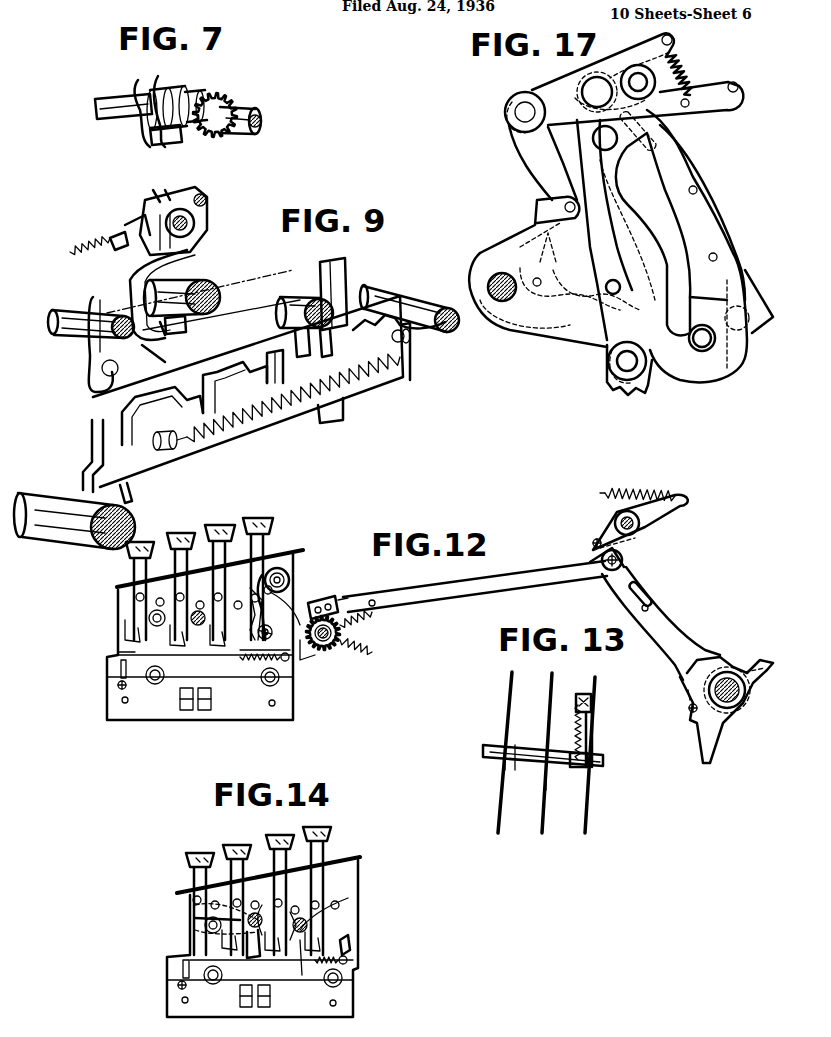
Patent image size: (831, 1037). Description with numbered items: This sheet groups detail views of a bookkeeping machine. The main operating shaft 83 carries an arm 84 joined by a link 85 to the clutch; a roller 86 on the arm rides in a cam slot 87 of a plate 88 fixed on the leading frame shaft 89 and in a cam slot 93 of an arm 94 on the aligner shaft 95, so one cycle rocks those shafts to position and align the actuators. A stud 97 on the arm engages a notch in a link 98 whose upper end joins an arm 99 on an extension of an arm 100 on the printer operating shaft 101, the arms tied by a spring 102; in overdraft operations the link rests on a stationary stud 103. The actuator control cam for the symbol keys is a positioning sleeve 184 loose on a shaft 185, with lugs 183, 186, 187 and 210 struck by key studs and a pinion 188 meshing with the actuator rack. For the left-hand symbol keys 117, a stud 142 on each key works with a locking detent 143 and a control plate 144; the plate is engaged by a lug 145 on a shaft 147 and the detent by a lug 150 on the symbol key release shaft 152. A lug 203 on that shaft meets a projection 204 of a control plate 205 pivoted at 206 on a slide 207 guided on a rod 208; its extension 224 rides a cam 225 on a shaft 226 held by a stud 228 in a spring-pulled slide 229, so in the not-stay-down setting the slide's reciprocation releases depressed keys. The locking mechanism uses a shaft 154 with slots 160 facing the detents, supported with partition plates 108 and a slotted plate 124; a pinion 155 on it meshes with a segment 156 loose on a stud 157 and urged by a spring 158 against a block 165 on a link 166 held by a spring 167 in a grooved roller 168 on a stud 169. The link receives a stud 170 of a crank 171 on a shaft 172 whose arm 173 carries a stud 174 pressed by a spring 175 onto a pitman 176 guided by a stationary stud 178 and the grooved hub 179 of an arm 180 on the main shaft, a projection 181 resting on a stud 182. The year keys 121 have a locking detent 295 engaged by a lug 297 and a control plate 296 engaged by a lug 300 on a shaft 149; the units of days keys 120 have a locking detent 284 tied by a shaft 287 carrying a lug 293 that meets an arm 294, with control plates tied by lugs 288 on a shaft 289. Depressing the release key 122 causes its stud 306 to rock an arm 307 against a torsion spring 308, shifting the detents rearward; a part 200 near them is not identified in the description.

In FIG. 7, the lug 183 is at (190, 128).
In FIG. 7, the actuator positioning sleeve 184 is at (246, 109).
In FIG. 7, the shaft 185 is at (259, 118).
In FIG. 7, the lug 186 is at (168, 135).
In FIG. 7, the lug 187 is at (158, 82).
In FIG. 7, the pinion 188 is at (224, 98).
In FIG. 7, the lug 210 is at (142, 81).
In FIG. 17, the main operating shaft 83 is at (498, 276).
In FIG. 12, the main operating shaft 83 is at (746, 698).
In FIG. 17, the arm 84 is at (548, 328).
In FIG. 17, the link 85 is at (608, 373).
In FIG. 17, the roller 86 is at (705, 352).
In FIG. 17, the cam slot 87 is at (718, 258).
In FIG. 17, the plate 88 is at (740, 278).
In FIG. 17, the leading frame shaft 89 is at (608, 150).
In FIG. 17, the cam slot 93 is at (698, 192).
In FIG. 17, the arm 94 is at (717, 202).
In FIG. 17, the aligner shaft 95 is at (760, 312).
In FIG. 17, the stud 97 is at (532, 278).
In FIG. 17, the link 98 is at (538, 166).
In FIG. 17, the arm 99 is at (566, 85).
In FIG. 17, the arm 100 is at (670, 107).
In FIG. 17, the printer operating shaft 101 is at (637, 82).
In FIG. 17, the spring 102 is at (678, 63).
In FIG. 17, the stationary stud 103 is at (620, 289).
In FIG. 9, the symbol keys 117 is at (333, 262).
In FIG. 9, the stud 142 is at (362, 294).
In FIG. 9, the locking detent 143 is at (402, 338).
In FIG. 9, the control plate 144 is at (92, 433).
In FIG. 9, the lug 145 is at (60, 490).
In FIG. 9, the shaft 147 is at (117, 500).
In FIG. 9, the lug 150 is at (272, 336).
In FIG. 9, the symbol key release shaft 152 is at (200, 280).
In FIG. 12, the symbol key release shaft 152 is at (240, 655).
In FIG. 9, the shaft 154 is at (447, 325).
In FIG. 12, the shaft 154 is at (300, 652).
In FIG. 13, the shaft 154 is at (496, 748).
In FIG. 14, the shaft 154 is at (348, 937).
In FIG. 9, the lug 203 is at (214, 301).
In FIG. 9, the rearward projection 204 is at (165, 340).
In FIG. 9, the control plate 205 is at (130, 275).
In FIG. 9, the pivot 206 is at (102, 371).
In FIG. 9, the slide 207 is at (92, 350).
In FIG. 9, the rod 208 is at (72, 308).
In FIG. 9, the extension 224 is at (195, 247).
In FIG. 9, the cam 225 is at (196, 225).
In FIG. 9, the shaft 226 is at (158, 196).
In FIG. 9, the stud 228 is at (205, 206).
In FIG. 9, the slide 229 is at (130, 226).
In FIG. 12, the partition plate 108 is at (124, 642).
In FIG. 13, the partition plate 108 is at (510, 684).
In FIG. 14, the partition plate 108 is at (180, 960).
In FIG. 12, the year keys 121 is at (142, 542).
In FIG. 12, the plate 124 is at (134, 710).
In FIG. 14, the plate 124 is at (217, 1010).
In FIG. 12, the shaft 149 is at (118, 684).
In FIG. 12, the pinion 155 is at (322, 603).
In FIG. 13, the pinion 155 is at (572, 769).
In FIG. 12, the segment 156 is at (290, 583).
In FIG. 13, the segment 156 is at (580, 724).
In FIG. 12, the stud 157 is at (290, 574).
In FIG. 13, the stud 157 is at (576, 704).
In FIG. 12, the spring 158 is at (256, 600).
In FIG. 13, the spring 158 is at (576, 736).
In FIG. 12, the block 165 is at (348, 600).
In FIG. 12, the link 166 is at (475, 580).
In FIG. 12, the spring 167 is at (373, 652).
In FIG. 12, the roller 168 is at (363, 624).
In FIG. 12, the stud 169 is at (318, 648).
In FIG. 12, the stud 170 is at (606, 572).
In FIG. 12, the crank 171 is at (624, 556).
In FIG. 12, the shaft 172 is at (641, 530).
In FIG. 12, the arm 173 is at (606, 532).
In FIG. 12, the stud 174 is at (592, 544).
In FIG. 12, the spring 175 is at (658, 490).
In FIG. 12, the pitman 176 is at (665, 622).
In FIG. 12, the stationary stud 178 is at (650, 602).
In FIG. 12, the hub 179 is at (755, 688).
In FIG. 12, the arm 180 is at (713, 740).
In FIG. 12, the projection 181 is at (690, 696).
In FIG. 12, the stud 182 is at (690, 720).
In FIG. 12, the locking detent 295 is at (118, 652).
In FIG. 12, the lug 297 is at (225, 668).
In FIG. 12, the lug 300 is at (121, 667).
In FIG. 13, the slot 160 is at (546, 767).
In FIG. 13, the control plate 296 is at (546, 784).
In FIG. 14, the units of days keys 120 is at (240, 843).
In FIG. 14, the release key 122 is at (188, 858).
In FIG. 14, the bracket 200 is at (258, 948).
In FIG. 14, the locking detent 284 is at (200, 934).
In FIG. 14, the shaft 287 is at (350, 898).
In FIG. 14, the lug 288 is at (182, 968).
In FIG. 14, the shaft 289 is at (178, 986).
In FIG. 14, the lug 293 is at (303, 975).
In FIG. 14, the arm 294 is at (300, 910).
In FIG. 14, the stud 306 is at (193, 906).
In FIG. 14, the arm 307 is at (194, 919).
In FIG. 14, the torsion spring 308 is at (263, 890).